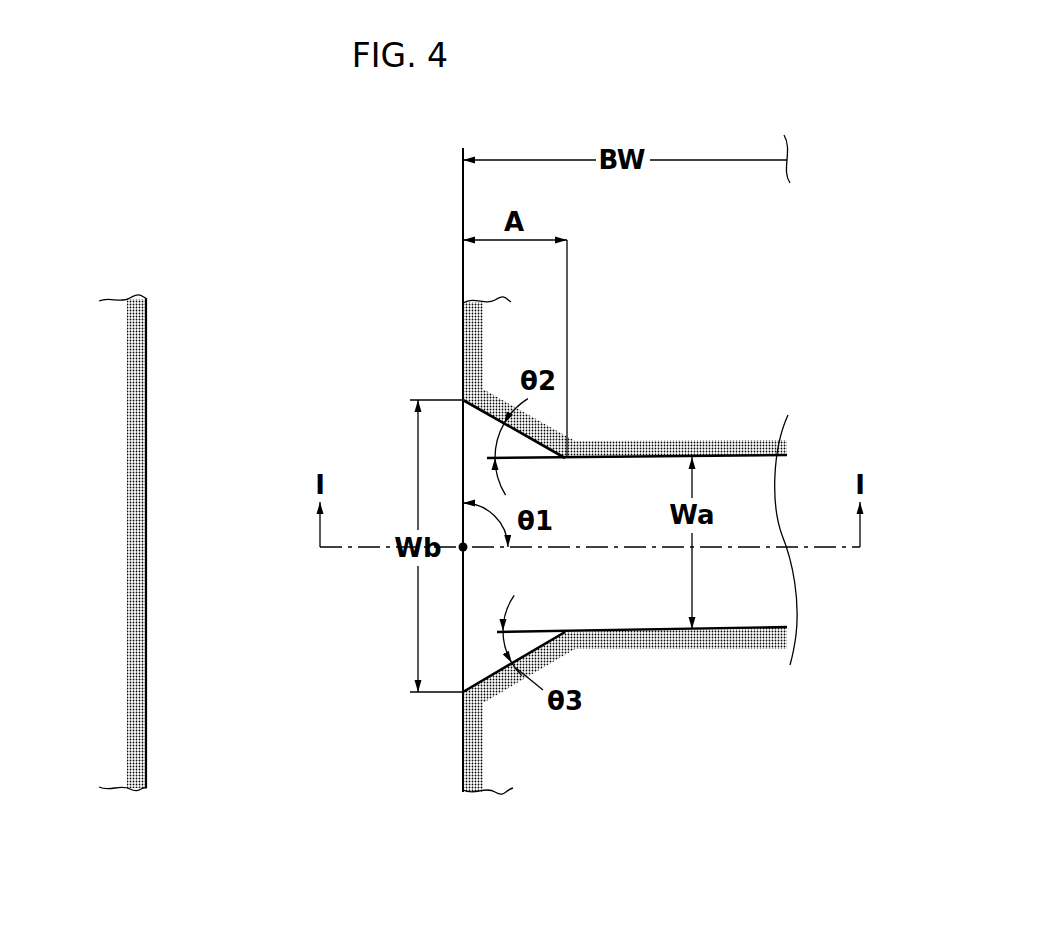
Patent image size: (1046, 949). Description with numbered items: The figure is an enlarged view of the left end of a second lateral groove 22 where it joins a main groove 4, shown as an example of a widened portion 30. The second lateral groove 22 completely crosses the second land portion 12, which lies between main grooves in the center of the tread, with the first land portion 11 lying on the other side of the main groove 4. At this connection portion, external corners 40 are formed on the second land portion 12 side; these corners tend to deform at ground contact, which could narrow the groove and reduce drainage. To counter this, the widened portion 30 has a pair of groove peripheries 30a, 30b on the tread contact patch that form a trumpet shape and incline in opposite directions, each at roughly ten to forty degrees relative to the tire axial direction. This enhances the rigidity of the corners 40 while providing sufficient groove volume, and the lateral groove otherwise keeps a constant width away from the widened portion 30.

The first land portion 11 is at (35, 551).
The main groove 4 is at (263, 666).
The second land portion 12 is at (745, 751).
The second lateral groove 22 is at (744, 483).
The widened portion 30 is at (552, 595).
The groove periphery 30a is at (548, 447).
The groove periphery 30b is at (560, 648).
The external corner 40 is at (488, 416).